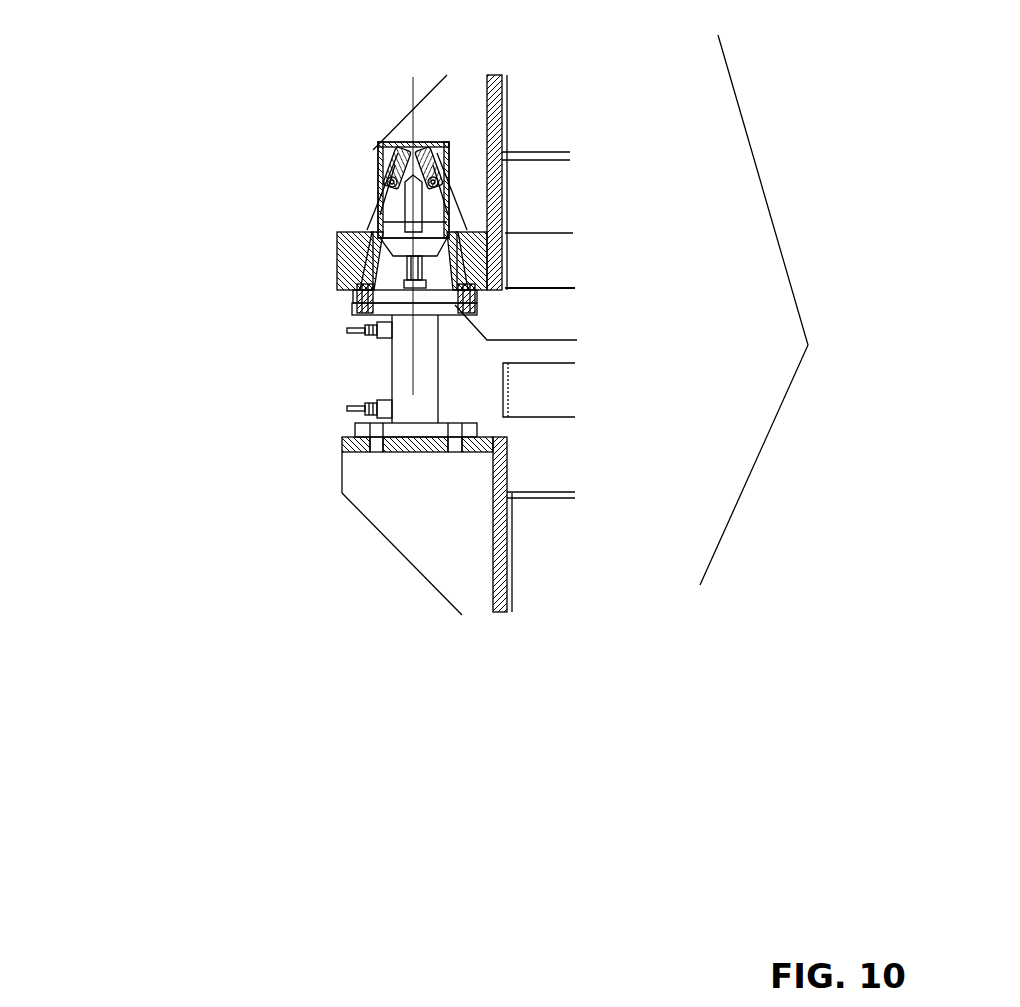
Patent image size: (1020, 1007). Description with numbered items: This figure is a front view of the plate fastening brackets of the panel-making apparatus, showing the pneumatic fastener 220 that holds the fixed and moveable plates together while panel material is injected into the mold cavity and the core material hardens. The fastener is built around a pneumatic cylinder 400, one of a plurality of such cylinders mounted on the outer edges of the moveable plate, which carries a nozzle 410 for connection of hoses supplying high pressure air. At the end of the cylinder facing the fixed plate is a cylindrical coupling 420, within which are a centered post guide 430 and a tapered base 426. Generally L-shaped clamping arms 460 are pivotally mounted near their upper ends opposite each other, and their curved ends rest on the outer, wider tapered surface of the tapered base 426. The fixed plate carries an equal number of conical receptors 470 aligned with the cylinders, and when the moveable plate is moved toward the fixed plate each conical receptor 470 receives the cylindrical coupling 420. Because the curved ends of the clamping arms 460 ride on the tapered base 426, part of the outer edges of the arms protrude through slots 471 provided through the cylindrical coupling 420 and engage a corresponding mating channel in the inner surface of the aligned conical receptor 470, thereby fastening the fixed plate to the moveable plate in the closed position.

The pneumatic fastener 220 is at (785, 310).
The pneumatic cylinder 400 is at (311, 507).
The nozzle 410 is at (343, 338).
The cylindrical coupling 420 is at (272, 326).
The tapered base 426 is at (425, 300).
The centered post guide 430 is at (527, 215).
The L-shaped clamping arm 460 is at (309, 172).
The conical receptor 470 is at (278, 240).
The slot 471 is at (372, 165).